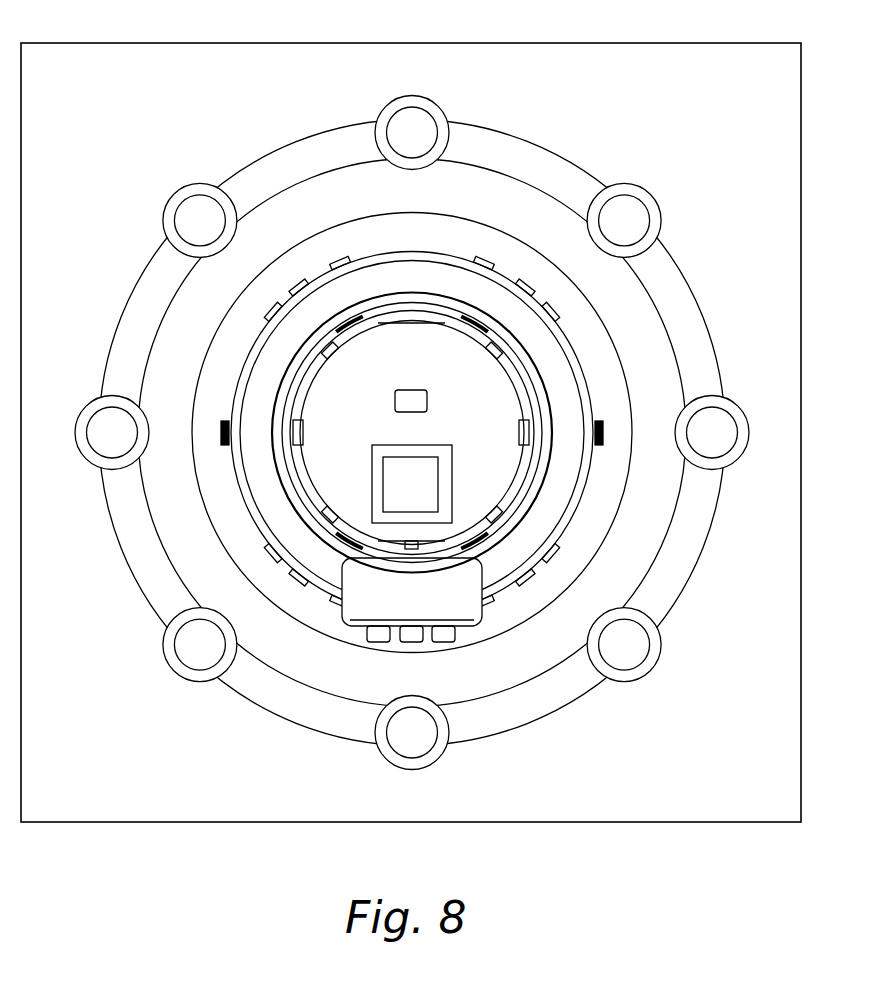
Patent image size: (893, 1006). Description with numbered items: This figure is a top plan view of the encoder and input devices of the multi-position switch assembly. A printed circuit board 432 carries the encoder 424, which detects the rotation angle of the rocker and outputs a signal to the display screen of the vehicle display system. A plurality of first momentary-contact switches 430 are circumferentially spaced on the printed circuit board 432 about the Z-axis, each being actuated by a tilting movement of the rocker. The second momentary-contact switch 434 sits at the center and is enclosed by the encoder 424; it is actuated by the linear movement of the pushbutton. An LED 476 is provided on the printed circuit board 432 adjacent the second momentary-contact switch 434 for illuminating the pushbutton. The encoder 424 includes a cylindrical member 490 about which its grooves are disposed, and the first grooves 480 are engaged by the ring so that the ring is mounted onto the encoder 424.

The encoder 424 is at (317, 600).
The first momentary-contact switch 430 is at (625, 222).
The printed circuit board 432 is at (523, 67).
The second momentary-contact switch 434 is at (417, 468).
The LED 476 is at (413, 395).
The first groove 480 is at (347, 565).
The cylindrical member 490 is at (390, 307).